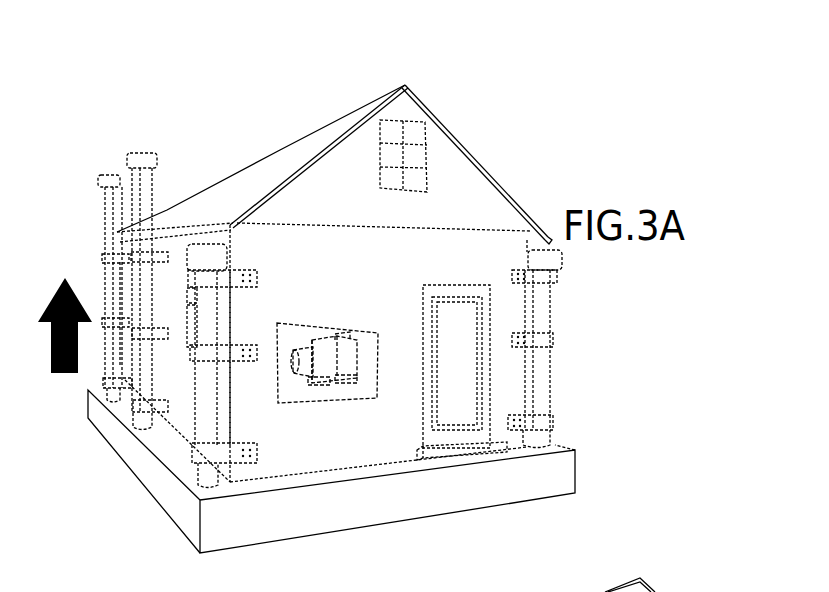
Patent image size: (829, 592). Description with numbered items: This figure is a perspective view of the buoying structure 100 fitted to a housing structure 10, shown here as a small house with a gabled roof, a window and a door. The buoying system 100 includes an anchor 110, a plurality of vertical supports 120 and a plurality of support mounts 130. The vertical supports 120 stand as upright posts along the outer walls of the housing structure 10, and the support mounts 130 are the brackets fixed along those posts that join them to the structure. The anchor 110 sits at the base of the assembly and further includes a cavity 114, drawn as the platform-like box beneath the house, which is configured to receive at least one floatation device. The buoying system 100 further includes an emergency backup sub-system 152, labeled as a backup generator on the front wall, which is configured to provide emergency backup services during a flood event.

The buoying structure 100 is at (627, 72).
The housing structure 10 is at (264, 110).
The anchor 110 is at (100, 382).
The cavity 114 is at (325, 470).
The plurality of vertical supports 120 is at (103, 260).
The plurality of support mounts 130 is at (552, 337).
The emergency backup sub-system 152 is at (330, 366).